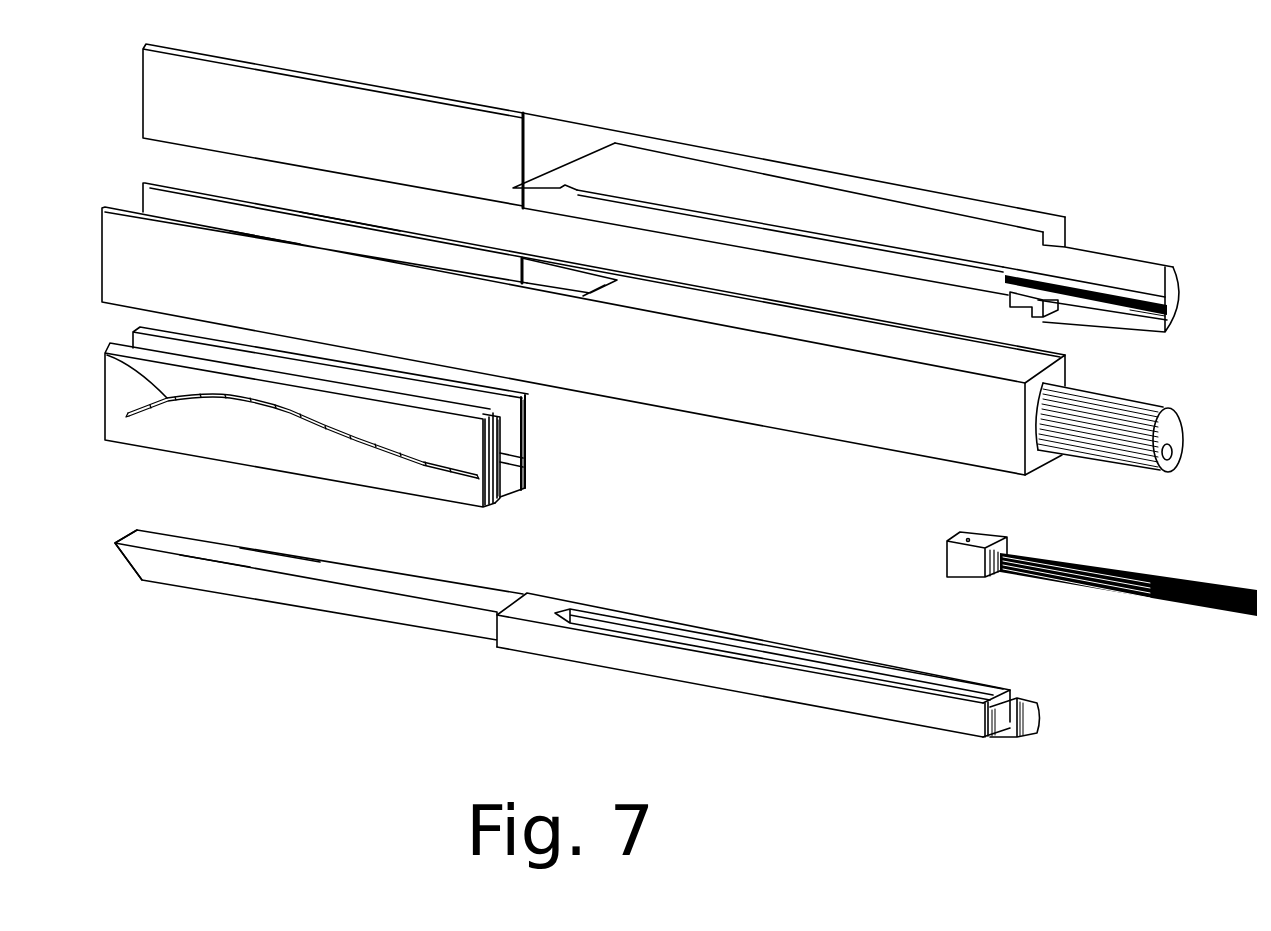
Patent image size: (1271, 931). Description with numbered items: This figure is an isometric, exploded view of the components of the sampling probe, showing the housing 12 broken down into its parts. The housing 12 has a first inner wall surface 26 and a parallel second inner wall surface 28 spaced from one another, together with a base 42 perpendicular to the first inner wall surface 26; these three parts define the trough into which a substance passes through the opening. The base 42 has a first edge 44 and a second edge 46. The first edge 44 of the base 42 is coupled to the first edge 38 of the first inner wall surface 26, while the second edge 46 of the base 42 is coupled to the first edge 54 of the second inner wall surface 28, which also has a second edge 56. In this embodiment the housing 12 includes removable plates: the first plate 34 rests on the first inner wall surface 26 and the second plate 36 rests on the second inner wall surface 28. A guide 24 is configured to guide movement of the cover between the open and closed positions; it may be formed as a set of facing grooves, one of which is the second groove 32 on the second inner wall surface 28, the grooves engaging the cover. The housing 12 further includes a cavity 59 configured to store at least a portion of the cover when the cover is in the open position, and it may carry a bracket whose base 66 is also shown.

The housing 12 is at (1030, 215).
The guide 24 is at (107, 353).
The first inner wall surface 26 is at (145, 183).
The second inner wall surface 28 is at (105, 208).
The second groove 32 is at (332, 427).
The first plate 34 is at (528, 432).
The second plate 36 is at (500, 500).
The first edge 38 is at (342, 217).
The base 42 is at (535, 612).
The first edge 44 is at (280, 555).
The second edge 46 is at (213, 562).
The first edge 54 is at (258, 238).
The second edge 56 is at (122, 303).
The cavity 59 is at (1010, 692).
The base 66 is at (126, 532).